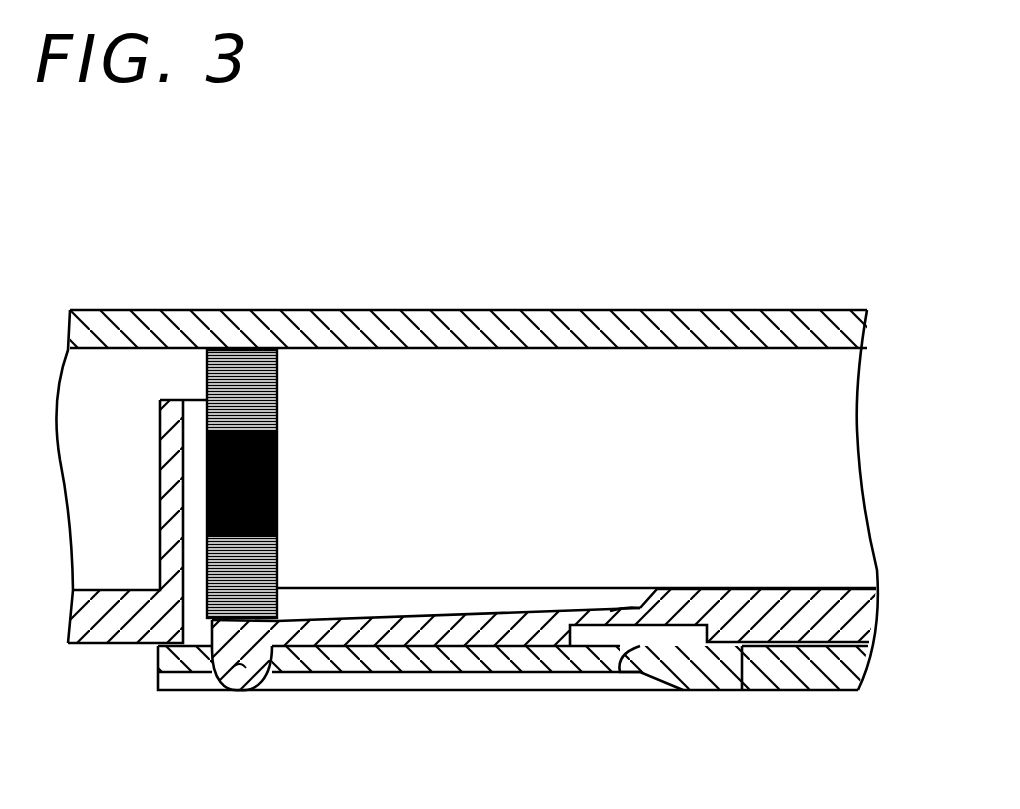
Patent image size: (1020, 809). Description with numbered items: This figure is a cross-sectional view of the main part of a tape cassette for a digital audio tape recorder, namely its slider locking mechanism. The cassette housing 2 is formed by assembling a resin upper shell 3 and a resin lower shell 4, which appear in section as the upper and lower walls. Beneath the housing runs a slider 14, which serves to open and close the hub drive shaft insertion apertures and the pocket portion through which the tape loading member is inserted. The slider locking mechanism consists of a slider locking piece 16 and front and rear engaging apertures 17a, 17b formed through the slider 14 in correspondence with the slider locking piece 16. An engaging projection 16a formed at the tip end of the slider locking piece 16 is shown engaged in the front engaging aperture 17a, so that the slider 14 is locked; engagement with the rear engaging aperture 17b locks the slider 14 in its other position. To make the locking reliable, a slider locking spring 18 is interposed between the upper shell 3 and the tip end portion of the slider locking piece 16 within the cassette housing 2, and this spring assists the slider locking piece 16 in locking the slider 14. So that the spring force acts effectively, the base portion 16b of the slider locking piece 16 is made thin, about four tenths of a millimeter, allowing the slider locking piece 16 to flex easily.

The housing 2 is at (645, 298).
The upper shell 3 is at (473, 325).
The lower shell 4 is at (745, 625).
The slider 14 is at (450, 692).
The slider locking piece 16 is at (477, 615).
The engaging projection 16a is at (232, 692).
The base portion 16b is at (610, 610).
The front engaging aperture 17a is at (258, 692).
The rear engaging aperture 17b is at (637, 664).
The slider locking spring 18 is at (278, 480).